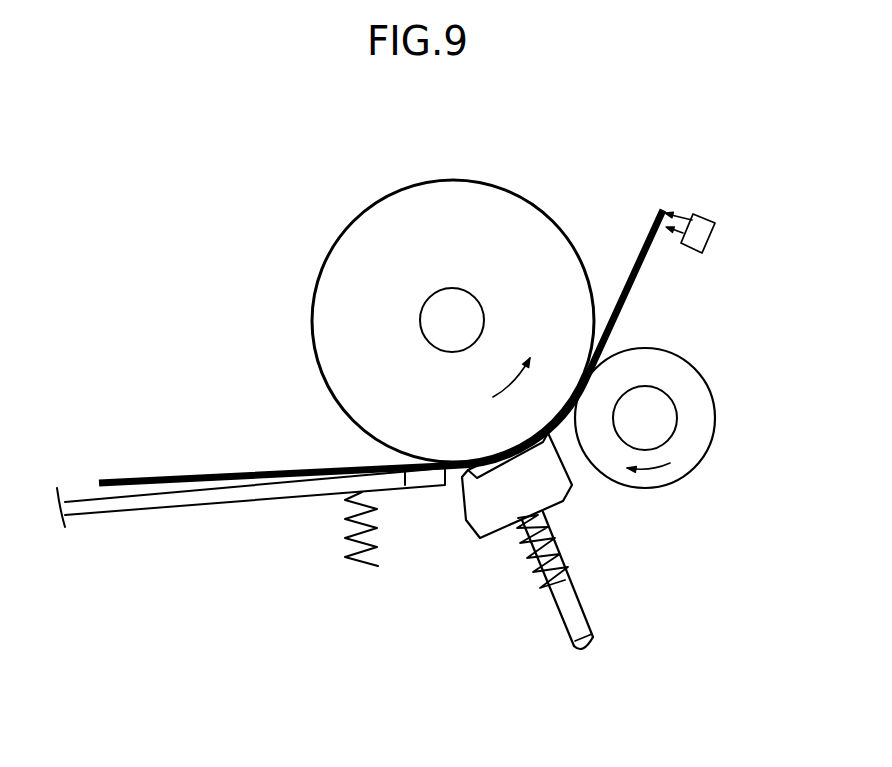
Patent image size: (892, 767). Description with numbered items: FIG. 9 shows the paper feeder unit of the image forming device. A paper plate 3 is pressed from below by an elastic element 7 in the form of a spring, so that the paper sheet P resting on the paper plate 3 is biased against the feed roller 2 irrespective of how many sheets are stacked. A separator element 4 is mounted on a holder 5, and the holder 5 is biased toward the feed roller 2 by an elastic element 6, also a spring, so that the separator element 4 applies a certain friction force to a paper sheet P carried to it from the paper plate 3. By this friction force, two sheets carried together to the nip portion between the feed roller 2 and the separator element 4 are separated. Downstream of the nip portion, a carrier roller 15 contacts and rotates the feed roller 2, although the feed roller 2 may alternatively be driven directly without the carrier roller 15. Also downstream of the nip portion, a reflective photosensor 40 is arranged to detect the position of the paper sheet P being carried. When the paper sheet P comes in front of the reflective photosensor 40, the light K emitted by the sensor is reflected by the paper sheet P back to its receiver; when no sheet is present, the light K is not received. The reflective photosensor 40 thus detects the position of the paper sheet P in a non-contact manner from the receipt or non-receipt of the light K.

The feed roller 2 is at (367, 253).
The paper plate 3 is at (368, 483).
The separator element 4 is at (518, 452).
The holder 5 is at (466, 518).
The elastic element 6 is at (540, 577).
The elastic element 7 is at (343, 518).
The carrier roller 15 is at (667, 368).
The reflective photosensor 40 is at (700, 232).
The light K is at (683, 222).
The paper sheet P is at (243, 470).